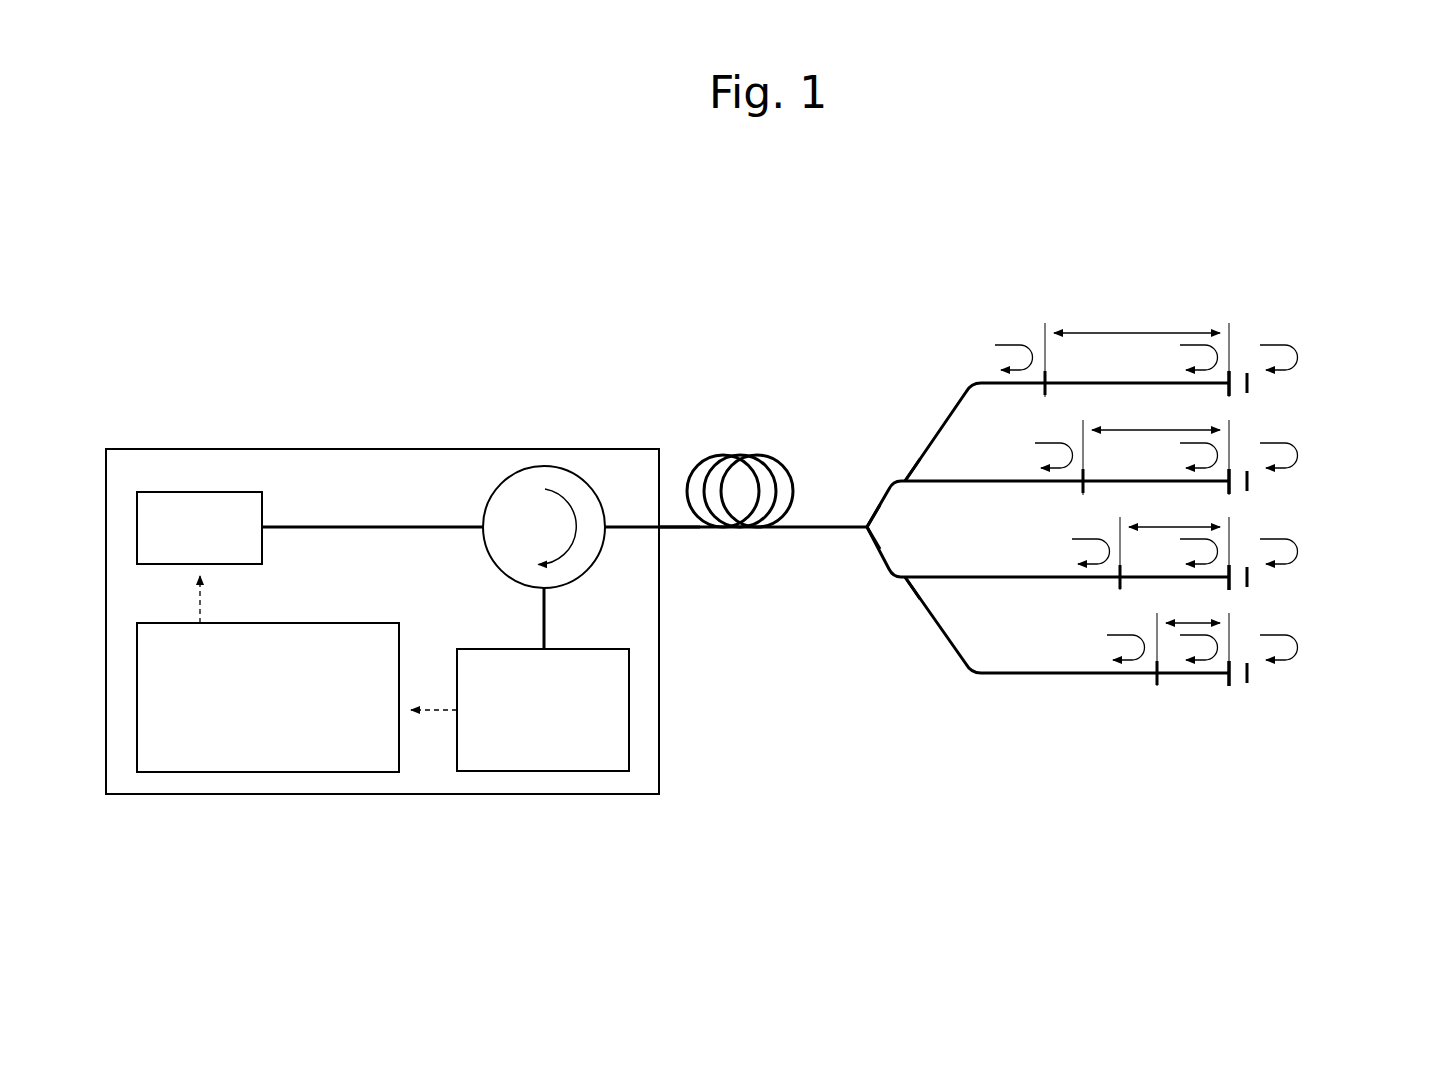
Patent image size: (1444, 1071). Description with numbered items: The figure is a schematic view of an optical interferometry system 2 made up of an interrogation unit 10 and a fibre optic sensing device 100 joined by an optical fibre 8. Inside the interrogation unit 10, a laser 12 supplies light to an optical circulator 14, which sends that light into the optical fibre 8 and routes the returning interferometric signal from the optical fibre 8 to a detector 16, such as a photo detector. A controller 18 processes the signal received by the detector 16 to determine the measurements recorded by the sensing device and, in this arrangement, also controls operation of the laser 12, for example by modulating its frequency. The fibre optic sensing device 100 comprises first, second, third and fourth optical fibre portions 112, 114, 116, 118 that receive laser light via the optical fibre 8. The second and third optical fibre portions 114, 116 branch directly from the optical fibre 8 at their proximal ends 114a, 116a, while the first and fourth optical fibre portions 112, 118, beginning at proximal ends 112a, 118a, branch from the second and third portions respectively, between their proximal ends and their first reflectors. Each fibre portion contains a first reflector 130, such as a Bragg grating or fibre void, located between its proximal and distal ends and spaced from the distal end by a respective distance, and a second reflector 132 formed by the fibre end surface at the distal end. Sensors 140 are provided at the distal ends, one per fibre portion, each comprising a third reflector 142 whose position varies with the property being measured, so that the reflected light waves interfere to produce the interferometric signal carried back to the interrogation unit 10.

The optical interferometry system 2 is at (472, 314).
The optical fibre 8 is at (730, 455).
The interrogation unit 10 is at (384, 455).
The laser 12 is at (192, 515).
The optical circulator 14 is at (528, 484).
The detector 16 is at (548, 752).
The controller 18 is at (255, 738).
The fibre optic sensing device 100 is at (929, 266).
The first optical fibre portion 112 is at (946, 641).
The proximal end of the first optical fibre portion 112a is at (906, 582).
The second optical fibre portion 114 is at (948, 575).
The proximal end of the second optical fibre portion 114a is at (862, 540).
The third optical fibre portion 116 is at (992, 478).
The proximal end of the third optical fibre portion 116a is at (866, 523).
The fourth optical fibre portion 118 is at (958, 392).
The proximal end of the fourth optical fibre portion 118a is at (905, 478).
The first reflector 130 is at (1050, 382).
The second reflector 132 is at (1195, 748).
The sensor 140 is at (1251, 383).
The third reflector 142 is at (1258, 382).